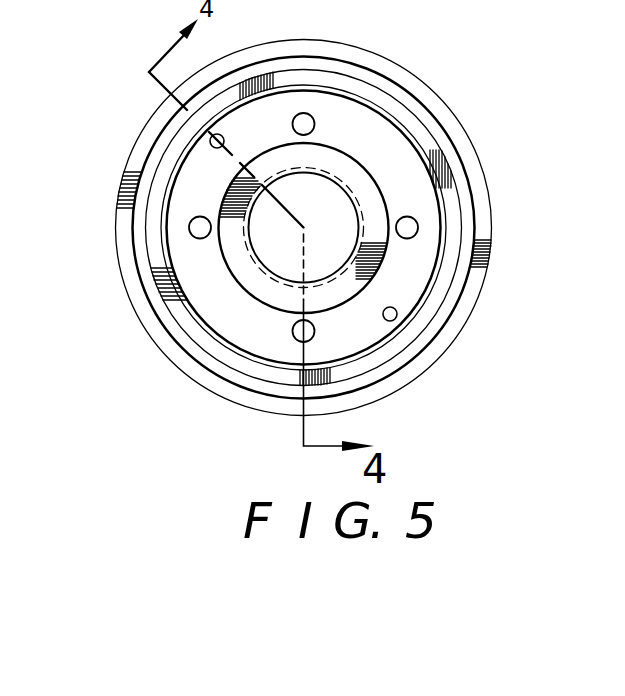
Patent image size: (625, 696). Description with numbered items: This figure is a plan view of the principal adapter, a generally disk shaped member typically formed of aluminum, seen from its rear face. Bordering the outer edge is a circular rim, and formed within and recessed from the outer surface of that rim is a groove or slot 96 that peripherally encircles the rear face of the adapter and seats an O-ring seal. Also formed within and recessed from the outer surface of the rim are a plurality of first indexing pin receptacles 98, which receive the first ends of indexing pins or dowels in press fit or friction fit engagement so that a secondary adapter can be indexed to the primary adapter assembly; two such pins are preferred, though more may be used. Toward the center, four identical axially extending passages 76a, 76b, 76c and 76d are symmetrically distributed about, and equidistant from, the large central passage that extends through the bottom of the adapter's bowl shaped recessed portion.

The axially extending passage 76a is at (304, 125).
The axially extending passage 76b is at (304, 331).
The axially extending passage 76c is at (407, 229).
The axially extending passage 76d is at (200, 229).
The groove 96 is at (447, 186).
The first indexing pin receptacle 98 is at (210, 140).